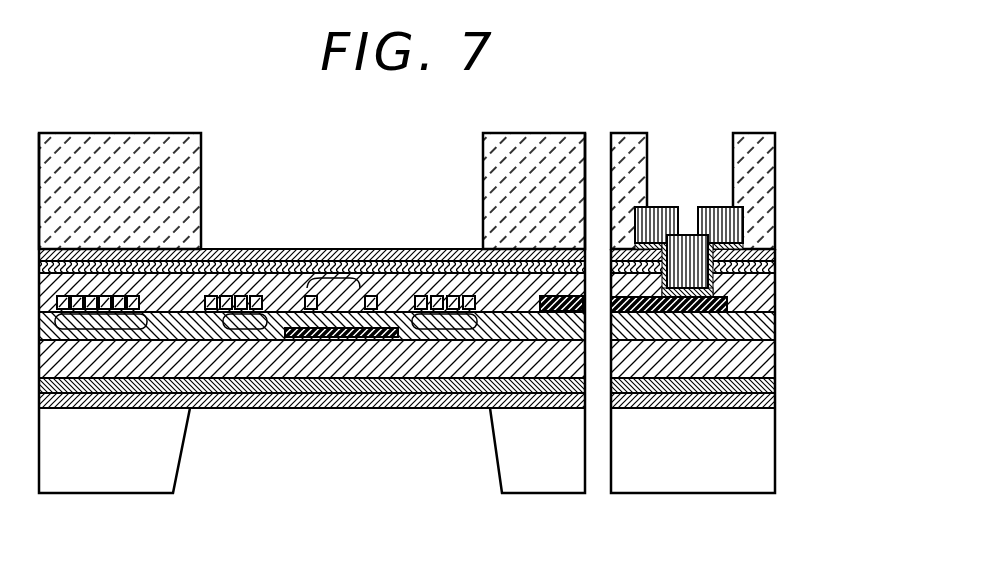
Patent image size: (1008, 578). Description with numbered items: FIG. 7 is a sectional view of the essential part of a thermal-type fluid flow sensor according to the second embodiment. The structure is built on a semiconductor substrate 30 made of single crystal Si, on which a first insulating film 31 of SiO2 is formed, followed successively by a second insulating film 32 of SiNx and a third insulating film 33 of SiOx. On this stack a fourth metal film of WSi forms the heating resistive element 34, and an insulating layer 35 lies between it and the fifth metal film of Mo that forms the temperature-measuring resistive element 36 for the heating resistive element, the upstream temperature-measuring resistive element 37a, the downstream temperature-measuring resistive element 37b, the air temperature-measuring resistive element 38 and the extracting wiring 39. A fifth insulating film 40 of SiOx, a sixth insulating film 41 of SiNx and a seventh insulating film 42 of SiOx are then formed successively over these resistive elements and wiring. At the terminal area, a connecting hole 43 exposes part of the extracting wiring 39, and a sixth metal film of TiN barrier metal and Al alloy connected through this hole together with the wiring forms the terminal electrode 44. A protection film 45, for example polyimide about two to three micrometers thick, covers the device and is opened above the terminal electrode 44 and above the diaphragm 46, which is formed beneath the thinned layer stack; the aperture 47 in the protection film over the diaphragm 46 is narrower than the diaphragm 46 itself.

The semiconductor substrate 30 is at (685, 495).
The first insulating film 31 is at (650, 408).
The second insulating film 32 is at (775, 393).
The third insulating film 33 is at (775, 355).
The heating resistive element 34 is at (345, 337).
The gate insulating layer 35 is at (775, 320).
The temperature-measuring resistive element for the heating resistive element 36 is at (345, 278).
The upstream temperature-measuring resistive element 37a is at (233, 323).
The downstream temperature-measuring resistive element 37b is at (447, 323).
The air temperature-measuring resistive element 38 is at (100, 323).
The extracting wiring 39 is at (703, 313).
The fifth insulating film 40 is at (775, 280).
The sixth insulating film 41 is at (395, 249).
The seventh insulating film 42 is at (442, 262).
The connecting hole 43 is at (690, 240).
The terminal electrode 44 is at (725, 225).
The protection film 45 is at (765, 155).
The diaphragm 46 is at (545, 480).
The aperture 47 is at (195, 152).